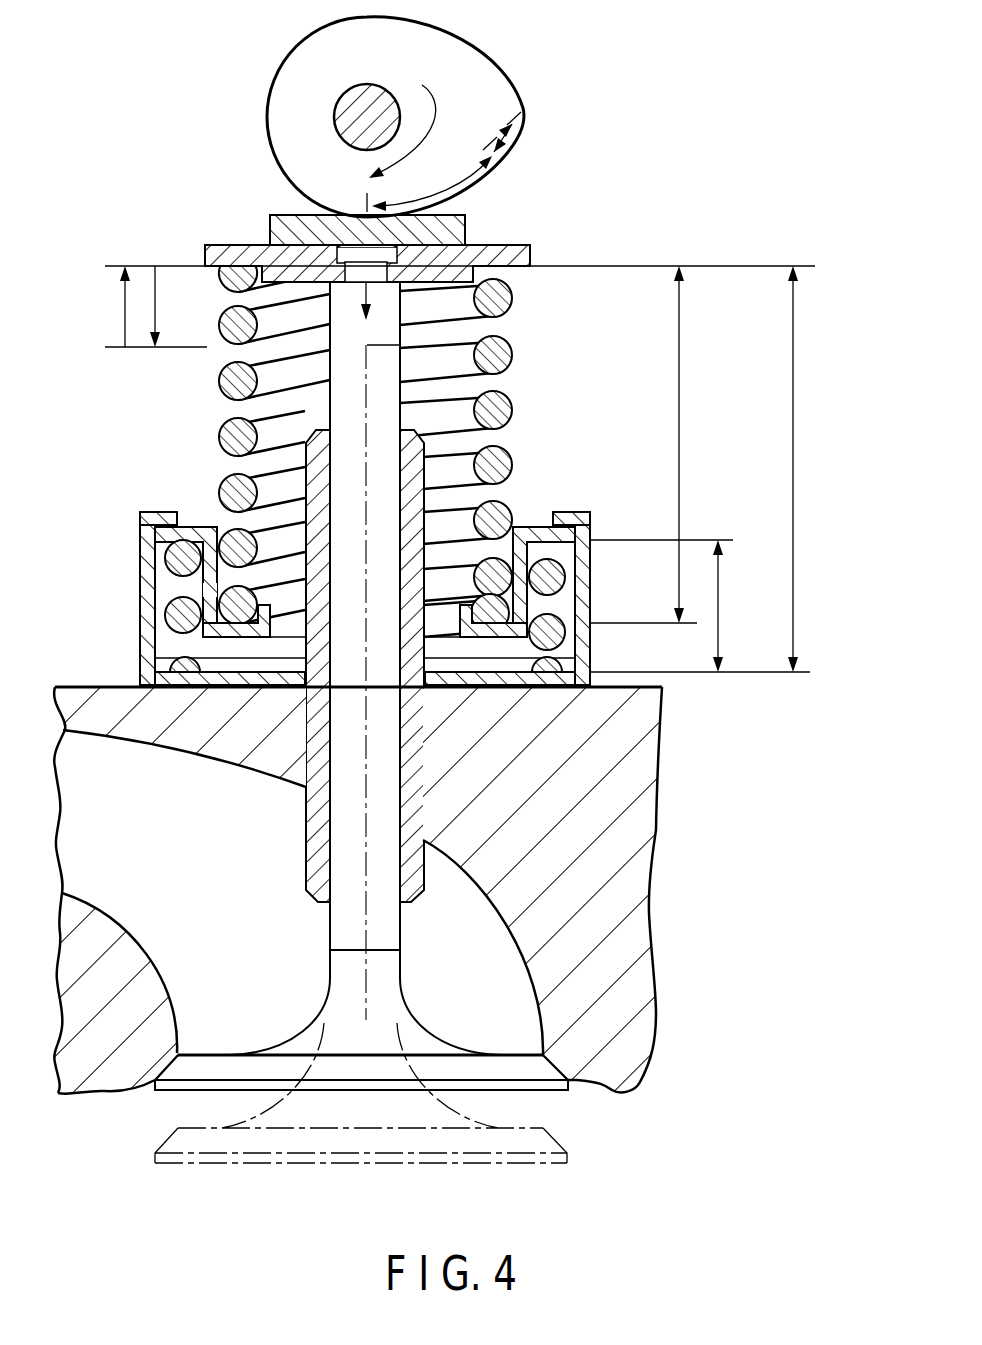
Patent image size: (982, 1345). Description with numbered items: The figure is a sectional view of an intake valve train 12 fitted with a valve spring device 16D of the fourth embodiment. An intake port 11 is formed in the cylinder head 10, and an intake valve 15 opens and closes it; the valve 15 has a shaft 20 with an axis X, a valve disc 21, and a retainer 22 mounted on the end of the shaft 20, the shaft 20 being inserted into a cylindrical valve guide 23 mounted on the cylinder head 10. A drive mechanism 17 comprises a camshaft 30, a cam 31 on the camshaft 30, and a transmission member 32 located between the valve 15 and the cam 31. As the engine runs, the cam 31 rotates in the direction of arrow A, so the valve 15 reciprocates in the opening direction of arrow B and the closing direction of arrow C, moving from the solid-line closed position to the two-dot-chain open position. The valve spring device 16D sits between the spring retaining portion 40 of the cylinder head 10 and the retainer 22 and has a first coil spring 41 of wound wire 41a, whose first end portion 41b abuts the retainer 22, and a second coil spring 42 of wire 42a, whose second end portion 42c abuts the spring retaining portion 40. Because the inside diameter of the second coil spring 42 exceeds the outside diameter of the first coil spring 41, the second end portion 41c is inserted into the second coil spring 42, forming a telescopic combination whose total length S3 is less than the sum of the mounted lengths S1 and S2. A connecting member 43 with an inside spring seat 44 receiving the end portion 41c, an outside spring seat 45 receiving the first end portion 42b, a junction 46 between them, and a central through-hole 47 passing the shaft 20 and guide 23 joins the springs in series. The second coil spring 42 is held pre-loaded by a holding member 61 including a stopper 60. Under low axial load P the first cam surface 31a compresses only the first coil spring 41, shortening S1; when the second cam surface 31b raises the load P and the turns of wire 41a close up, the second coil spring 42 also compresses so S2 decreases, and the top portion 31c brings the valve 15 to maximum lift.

The cylinder head 10 is at (620, 822).
The intake port 11 is at (510, 1020).
The intake valve train 12 is at (702, 198).
The intake valve 15 is at (427, 736).
The valve spring device 16D is at (146, 432).
The drive mechanism 17 is at (392, 117).
The shaft 20 is at (385, 490).
The valve disc 21 is at (365, 1072).
The retainer 22 is at (483, 248).
The valve guide 23 is at (317, 733).
The camshaft 30 is at (362, 118).
The cam 31 is at (467, 70).
The first cam surface 31a is at (462, 190).
The second cam surface 31b is at (520, 140).
The top portion 31c is at (527, 125).
The transmission member 32 is at (292, 232).
The spring retaining portion 40 is at (513, 690).
The first coil spring 41 is at (314, 430).
The wire 41a is at (500, 410).
The first end portion 41b is at (240, 268).
The second end portion 41c is at (235, 605).
The second coil spring 42 is at (560, 575).
The wire 42a is at (557, 633).
The first end portion 42b is at (180, 560).
The second end portion 42c is at (180, 672).
The connecting member 43 is at (207, 527).
The inside spring seat 44 is at (222, 635).
The outside spring seat 45 is at (158, 530).
The junction 46 is at (213, 590).
The through-hole 47 is at (185, 670).
The stopper 60 is at (565, 515).
The holding member 61 is at (580, 593).
The arrow A is at (432, 122).
The arrow B is at (157, 300).
The arrow C is at (123, 312).
The axial load P is at (480, 300).
The axis X is at (480, 355).
The length of first coil spring S1 is at (683, 420).
The length of second coil spring S2 is at (721, 585).
The length of valve spring device S3 is at (795, 452).